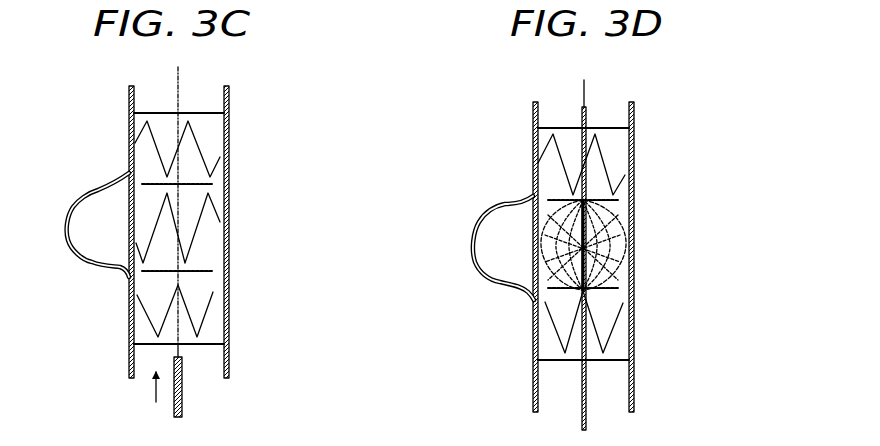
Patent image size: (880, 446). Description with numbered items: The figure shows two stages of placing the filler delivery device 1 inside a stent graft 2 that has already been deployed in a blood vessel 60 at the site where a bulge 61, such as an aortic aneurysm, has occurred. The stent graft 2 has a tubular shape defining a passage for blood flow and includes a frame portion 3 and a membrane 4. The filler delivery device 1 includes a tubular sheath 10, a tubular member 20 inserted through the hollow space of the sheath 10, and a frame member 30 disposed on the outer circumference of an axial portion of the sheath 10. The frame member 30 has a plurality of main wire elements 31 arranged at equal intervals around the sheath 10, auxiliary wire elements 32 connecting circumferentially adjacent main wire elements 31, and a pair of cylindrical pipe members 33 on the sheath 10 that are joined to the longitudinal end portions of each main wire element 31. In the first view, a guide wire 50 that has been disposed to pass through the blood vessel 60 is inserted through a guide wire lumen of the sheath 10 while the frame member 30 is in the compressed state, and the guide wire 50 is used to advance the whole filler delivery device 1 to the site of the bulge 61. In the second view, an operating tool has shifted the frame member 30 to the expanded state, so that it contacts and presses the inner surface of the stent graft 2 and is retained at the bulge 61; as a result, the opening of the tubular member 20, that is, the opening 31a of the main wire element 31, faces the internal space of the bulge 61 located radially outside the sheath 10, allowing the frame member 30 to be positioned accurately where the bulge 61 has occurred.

In FIG. 3C, the filler delivery device 1 is at (140, 404).
In FIG. 3D, the filler delivery device 1 is at (524, 311).
In FIG. 3C, the stent graft 2 is at (219, 229).
In FIG. 3C, the frame portion 3 is at (204, 250).
In FIG. 3C, the membrane 4 is at (213, 143).
In FIG. 3D, the tubular sheath 10 is at (563, 247).
In FIG. 3C, the tubular member 20 is at (179, 232).
In FIG. 3D, the tubular member 20 is at (531, 196).
In FIG. 3C, the frame member 30 is at (272, 378).
In FIG. 3D, the frame member 30 is at (625, 210).
In FIG. 3C, the main wire element 31 is at (272, 378).
In FIG. 3D, the main wire element 31 is at (651, 243).
In FIG. 3D, the opening of the main wire element 31a is at (540, 242).
In FIG. 3C, the auxiliary wire element 32 is at (272, 378).
In FIG. 3D, the auxiliary wire element 32 is at (651, 243).
In FIG. 3C, the cylindrical pipe member 33 is at (182, 357).
In FIG. 3D, the cylindrical pipe member 33 is at (581, 120).
In FIG. 3C, the guide wire 50 is at (178, 100).
In FIG. 3D, the guide wire 50 is at (585, 100).
In FIG. 3C, the blood vessel 60 is at (229, 113).
In FIG. 3D, the blood vessel 60 is at (634, 128).
In FIG. 3C, the bulge 61 is at (85, 192).
In FIG. 3D, the bulge 61 is at (490, 205).